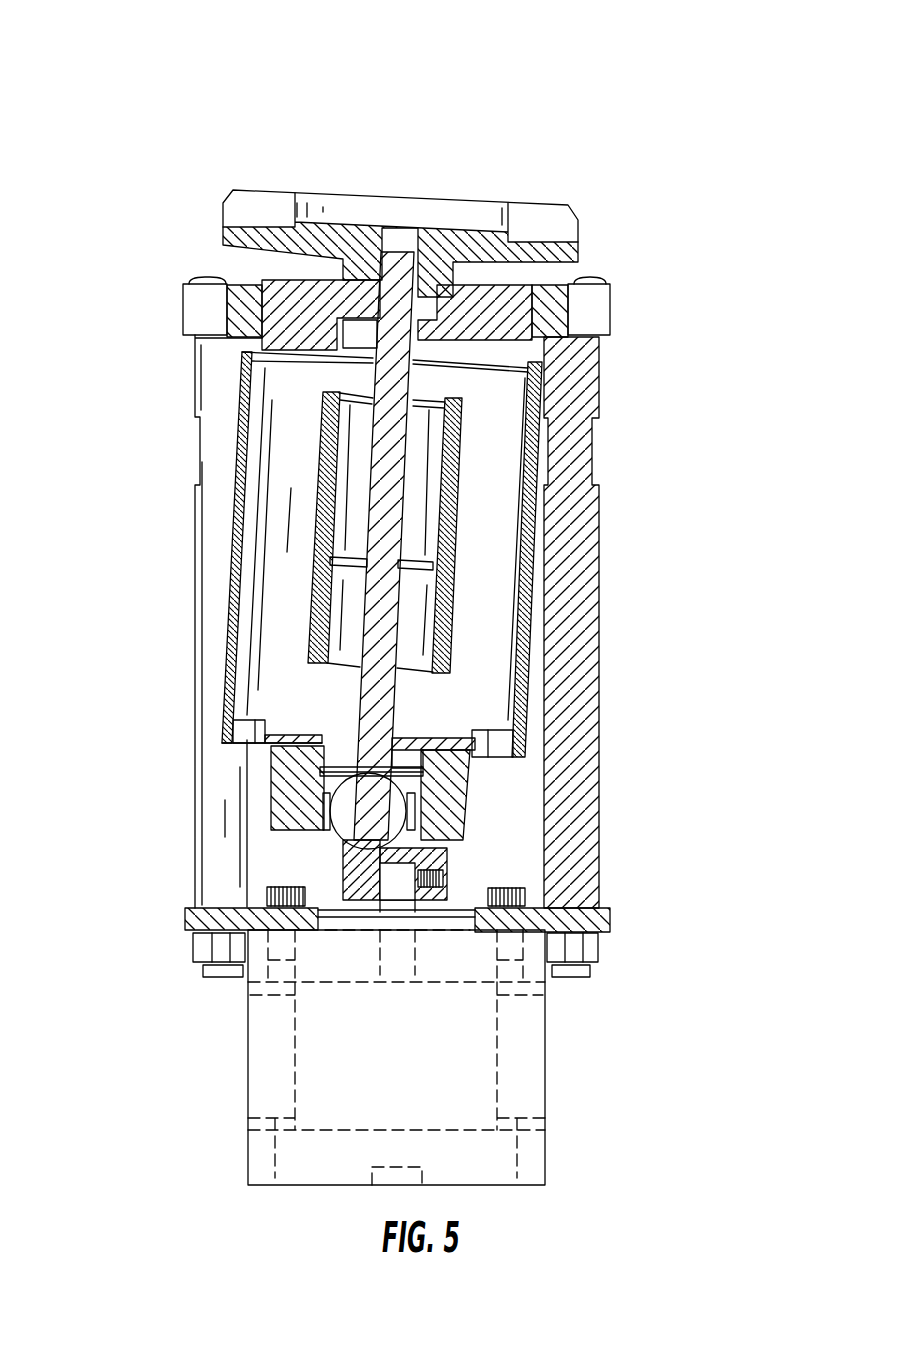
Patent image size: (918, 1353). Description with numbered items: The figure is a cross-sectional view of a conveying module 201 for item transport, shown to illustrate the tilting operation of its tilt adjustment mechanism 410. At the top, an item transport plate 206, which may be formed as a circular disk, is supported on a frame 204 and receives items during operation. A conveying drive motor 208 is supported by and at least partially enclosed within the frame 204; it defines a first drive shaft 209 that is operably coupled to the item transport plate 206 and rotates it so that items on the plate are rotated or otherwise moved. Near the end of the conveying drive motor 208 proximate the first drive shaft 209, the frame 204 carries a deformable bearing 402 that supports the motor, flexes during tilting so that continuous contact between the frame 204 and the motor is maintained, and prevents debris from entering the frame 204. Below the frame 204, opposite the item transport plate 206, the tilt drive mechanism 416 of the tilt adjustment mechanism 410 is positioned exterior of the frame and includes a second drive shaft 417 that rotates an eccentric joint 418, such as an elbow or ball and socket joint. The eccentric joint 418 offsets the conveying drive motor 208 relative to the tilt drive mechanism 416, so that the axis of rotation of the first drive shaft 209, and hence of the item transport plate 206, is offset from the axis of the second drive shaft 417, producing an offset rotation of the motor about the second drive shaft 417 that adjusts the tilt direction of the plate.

The conveying module 201 is at (170, 103).
The item transport plate 206 is at (596, 212).
The frame 204 is at (181, 394).
The deformable bearing 402 is at (557, 319).
The first drive shaft 209 is at (426, 346).
The conveying drive motor 208 is at (279, 615).
The eccentric joint 418 is at (328, 869).
The second drive shaft 417 is at (429, 895).
The tilt adjustment mechanism 410 is at (92, 870).
The tilt drive mechanism 416 is at (268, 1053).